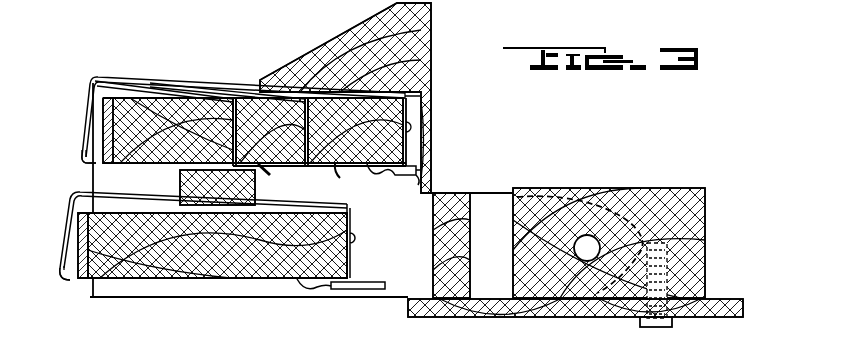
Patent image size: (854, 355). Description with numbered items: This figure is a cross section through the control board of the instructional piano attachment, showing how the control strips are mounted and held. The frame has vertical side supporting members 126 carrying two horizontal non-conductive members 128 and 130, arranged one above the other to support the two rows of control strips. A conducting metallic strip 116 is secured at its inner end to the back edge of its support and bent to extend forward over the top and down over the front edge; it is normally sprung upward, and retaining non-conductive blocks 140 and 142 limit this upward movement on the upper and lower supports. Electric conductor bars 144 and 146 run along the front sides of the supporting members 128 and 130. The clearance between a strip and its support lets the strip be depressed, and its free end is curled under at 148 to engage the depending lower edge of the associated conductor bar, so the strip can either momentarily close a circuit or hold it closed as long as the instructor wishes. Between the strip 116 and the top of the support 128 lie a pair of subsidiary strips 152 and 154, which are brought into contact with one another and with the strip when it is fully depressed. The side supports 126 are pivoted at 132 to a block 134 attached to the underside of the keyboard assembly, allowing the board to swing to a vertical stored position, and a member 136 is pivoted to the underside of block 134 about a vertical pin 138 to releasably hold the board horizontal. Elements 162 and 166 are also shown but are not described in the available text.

The conducting metallic strip 116 is at (160, 85).
The vertical side supporting member 126 is at (488, 208).
The horizontal member 128 is at (128, 163).
The horizontal member 130 is at (213, 270).
The pivot 132 is at (587, 261).
The block 134 is at (560, 188).
The member 136 is at (720, 299).
The vertical pin 138 is at (676, 244).
The retaining non-conductive block 140 is at (328, 50).
The retaining non-conductive block 142 is at (246, 193).
The electric conductor bar 144 is at (107, 135).
The electric conductor bar 146 is at (85, 245).
The curled end 148 is at (82, 164).
The subsidiary strip 152 is at (133, 90).
The subsidiary strip 154 is at (110, 82).
The terminal tab 162 is at (375, 281).
The contact member 166 is at (416, 177).